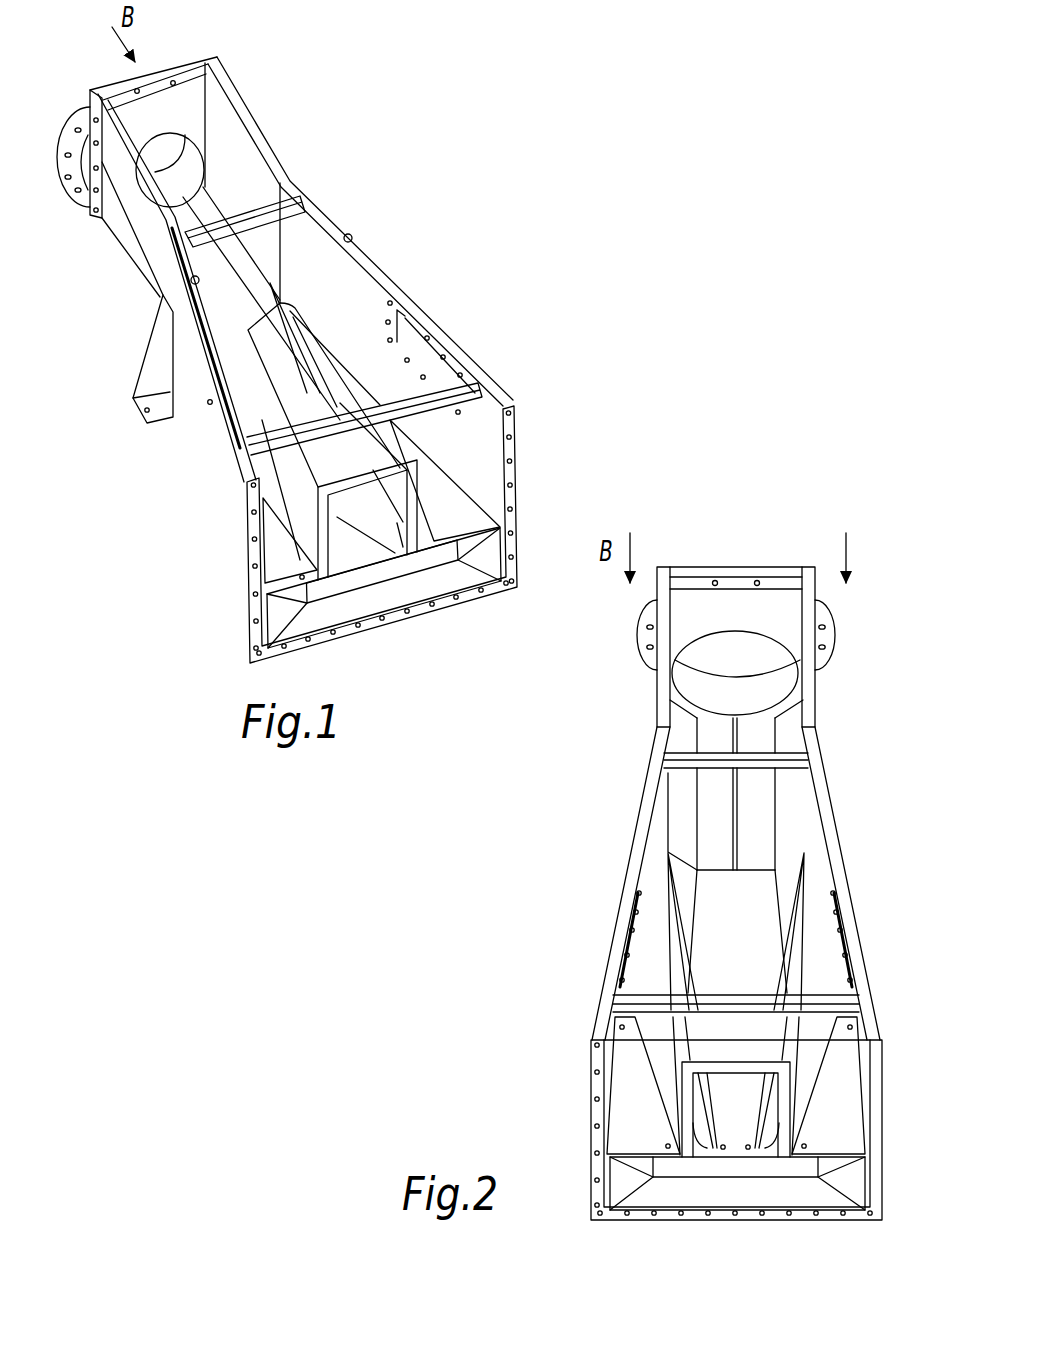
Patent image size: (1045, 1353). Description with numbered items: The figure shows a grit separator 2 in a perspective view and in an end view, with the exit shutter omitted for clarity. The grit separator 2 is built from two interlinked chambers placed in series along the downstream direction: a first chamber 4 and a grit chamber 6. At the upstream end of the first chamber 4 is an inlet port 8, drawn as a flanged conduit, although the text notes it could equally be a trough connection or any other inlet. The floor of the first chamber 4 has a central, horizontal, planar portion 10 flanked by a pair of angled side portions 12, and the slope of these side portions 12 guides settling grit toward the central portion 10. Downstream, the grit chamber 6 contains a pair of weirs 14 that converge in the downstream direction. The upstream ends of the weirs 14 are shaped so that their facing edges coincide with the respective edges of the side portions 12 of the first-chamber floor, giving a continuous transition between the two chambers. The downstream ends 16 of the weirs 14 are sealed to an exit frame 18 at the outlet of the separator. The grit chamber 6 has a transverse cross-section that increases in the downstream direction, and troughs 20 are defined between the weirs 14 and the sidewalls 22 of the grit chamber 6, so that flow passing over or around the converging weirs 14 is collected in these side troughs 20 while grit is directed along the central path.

In FIG. 1, the grit separator 2 is at (414, 277).
In FIG. 2, the grit separator 2 is at (864, 869).
In FIG. 1, the first chamber 4 is at (253, 187).
In FIG. 2, the first chamber 4 is at (693, 732).
In FIG. 1, the grit chamber 6 is at (345, 287).
In FIG. 2, the grit chamber 6 is at (743, 887).
In FIG. 1, the inlet port 8 is at (188, 165).
In FIG. 2, the inlet port 8 is at (740, 667).
In FIG. 2, the central planar portion 10 is at (737, 812).
In FIG. 2, the angled side portions 12 is at (748, 837).
In FIG. 1, the weirs 14 is at (320, 397).
In FIG. 2, the weirs 14 is at (680, 927).
In FIG. 2, the downstream ends of the weirs 16 is at (702, 1143).
In FIG. 1, the exit frame 18 is at (367, 520).
In FIG. 2, the exit frame 18 is at (785, 1107).
In FIG. 1, the troughs 20 is at (297, 567).
In FIG. 2, the troughs 20 is at (630, 1137).
In FIG. 1, the sidewalls 22 is at (241, 506).
In FIG. 2, the sidewalls 22 is at (877, 1025).